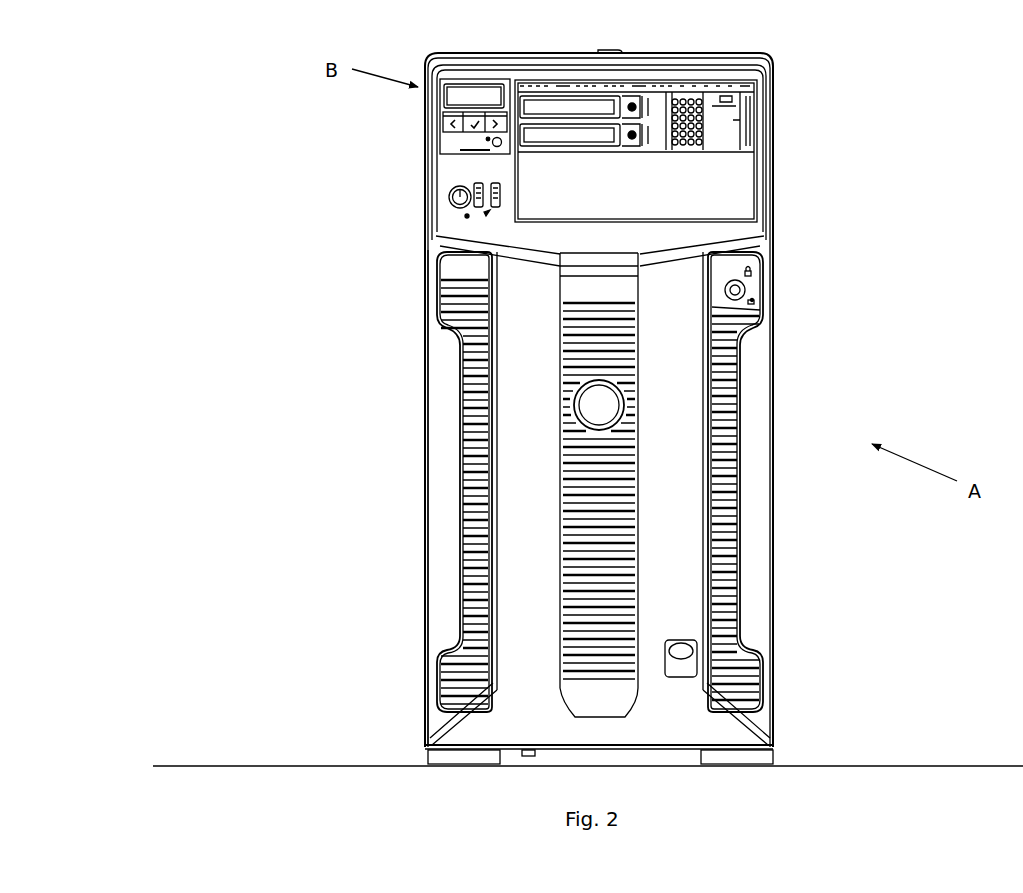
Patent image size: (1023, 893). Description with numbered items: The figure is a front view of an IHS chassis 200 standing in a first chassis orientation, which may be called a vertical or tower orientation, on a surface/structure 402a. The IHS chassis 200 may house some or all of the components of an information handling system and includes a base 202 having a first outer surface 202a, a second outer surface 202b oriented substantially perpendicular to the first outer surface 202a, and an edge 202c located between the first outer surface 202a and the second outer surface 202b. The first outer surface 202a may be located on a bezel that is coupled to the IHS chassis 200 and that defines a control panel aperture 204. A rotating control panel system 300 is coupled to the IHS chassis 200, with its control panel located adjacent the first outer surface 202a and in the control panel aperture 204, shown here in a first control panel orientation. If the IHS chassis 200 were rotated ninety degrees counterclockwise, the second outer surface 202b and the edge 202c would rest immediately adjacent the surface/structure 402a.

The IHS chassis 200 is at (878, 175).
The base 202 is at (426, 60).
The first outer surface 202a is at (456, 164).
The second outer surface 202b is at (420, 373).
The edge 202c is at (425, 244).
The control panel aperture 204 is at (438, 118).
The rotating control panel system 300 is at (478, 96).
The surface/structure 402a is at (900, 766).